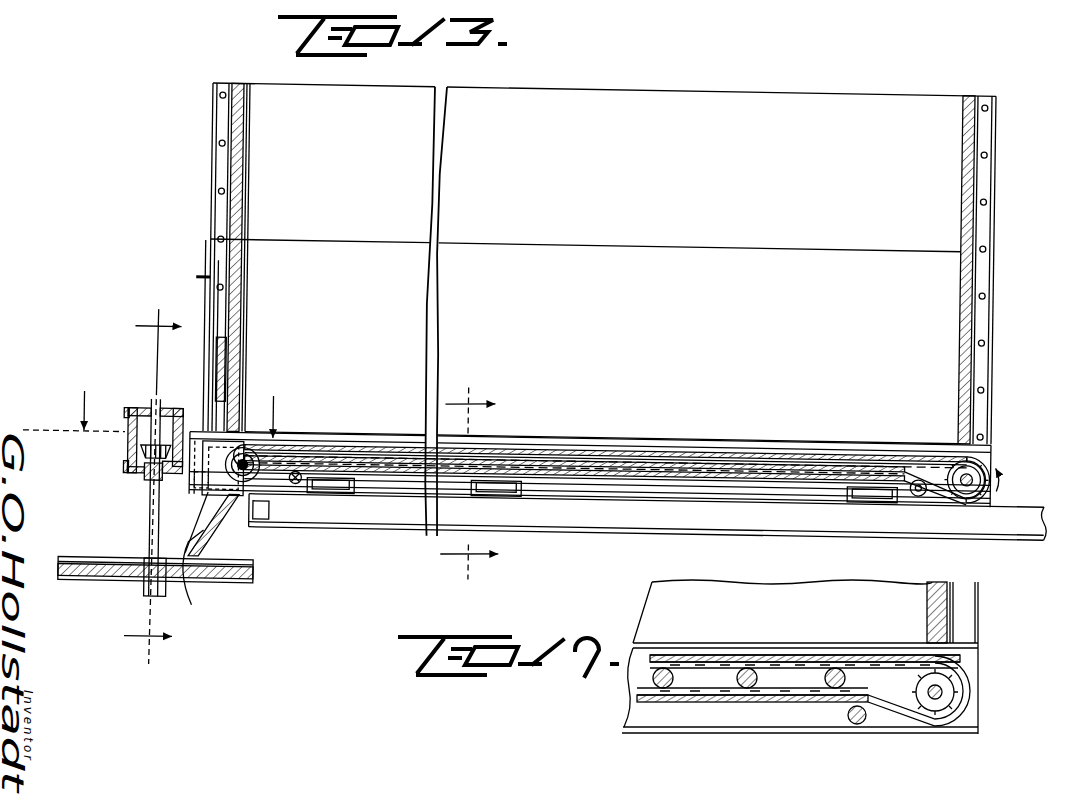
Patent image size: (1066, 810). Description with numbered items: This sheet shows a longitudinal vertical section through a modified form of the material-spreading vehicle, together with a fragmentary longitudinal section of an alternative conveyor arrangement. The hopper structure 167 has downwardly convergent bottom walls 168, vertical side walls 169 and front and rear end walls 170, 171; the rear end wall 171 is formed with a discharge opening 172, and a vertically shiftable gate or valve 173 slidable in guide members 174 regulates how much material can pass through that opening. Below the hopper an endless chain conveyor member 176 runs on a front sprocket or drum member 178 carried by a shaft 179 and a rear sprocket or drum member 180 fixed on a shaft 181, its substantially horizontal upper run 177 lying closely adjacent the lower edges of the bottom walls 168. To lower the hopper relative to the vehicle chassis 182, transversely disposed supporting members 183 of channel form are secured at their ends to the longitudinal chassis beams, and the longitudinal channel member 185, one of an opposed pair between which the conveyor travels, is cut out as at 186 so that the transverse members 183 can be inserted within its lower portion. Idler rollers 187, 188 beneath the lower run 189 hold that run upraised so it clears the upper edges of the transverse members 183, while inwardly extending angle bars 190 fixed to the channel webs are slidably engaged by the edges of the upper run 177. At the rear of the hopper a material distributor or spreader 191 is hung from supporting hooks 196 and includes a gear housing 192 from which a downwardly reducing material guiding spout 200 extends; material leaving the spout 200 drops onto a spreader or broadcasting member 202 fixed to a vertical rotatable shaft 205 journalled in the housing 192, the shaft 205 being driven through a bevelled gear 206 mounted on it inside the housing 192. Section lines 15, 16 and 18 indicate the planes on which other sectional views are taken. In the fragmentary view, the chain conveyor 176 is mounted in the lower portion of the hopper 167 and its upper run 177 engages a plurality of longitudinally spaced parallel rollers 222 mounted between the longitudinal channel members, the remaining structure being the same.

In FIG. 13, the section line 15 is at (159, 405).
In FIG. 13, the section line 16 is at (152, 487).
In FIG. 13, the section line 18 is at (470, 475).
In FIG. 13, the hopper structure 167 is at (854, 99).
In FIG. 19, the hopper structure 167 is at (926, 602).
In FIG. 13, the bottom walls 168 is at (678, 259).
In FIG. 13, the side walls 169 is at (693, 97).
In FIG. 13, the front end wall 170 is at (966, 149).
In FIG. 19, the front end wall 170 is at (942, 622).
In FIG. 13, the rear end wall 171 is at (244, 159).
In FIG. 13, the discharge opening 172 is at (234, 362).
In FIG. 13, the gate or valve 173 is at (225, 305).
In FIG. 13, the guide members 174 is at (224, 368).
In FIG. 13, the endless conveyor member 176 is at (644, 442).
In FIG. 19, the endless conveyor member 176 is at (786, 657).
In FIG. 13, the upper run 177 is at (712, 450).
In FIG. 19, the upper run 177 is at (716, 655).
In FIG. 13, the front sprocket or drum member 178 is at (990, 452).
In FIG. 13, the shaft 179 is at (994, 479).
In FIG. 19, the shaft 179 is at (937, 702).
In FIG. 13, the rear sprocket or drum member 180 is at (241, 505).
In FIG. 13, the shaft 181 is at (252, 446).
In FIG. 13, the vehicle chassis 182 is at (646, 503).
In FIG. 19, the vehicle chassis 182 is at (786, 727).
In FIG. 13, the supporting members 183 is at (521, 495).
In FIG. 13, the channel member 185 is at (812, 487).
In FIG. 13, the cut out 186 is at (366, 493).
In FIG. 13, the idler roller 187 is at (306, 489).
In FIG. 13, the idler roller 188 is at (918, 490).
In FIG. 13, the lower run 189 is at (706, 474).
In FIG. 13, the angle bars 190 is at (889, 464).
In FIG. 13, the material distributor or spreader 191 is at (131, 406).
In FIG. 13, the gear housing 192 is at (151, 471).
In FIG. 13, the supporting hook 196 is at (207, 433).
In FIG. 13, the material guiding spout 200 is at (204, 580).
In FIG. 13, the spreader or broadcasting member 202 is at (112, 582).
In FIG. 13, the rotatable shaft 205 is at (163, 503).
In FIG. 13, the bevelled gear 206 is at (133, 449).
In FIG. 19, the rollers 222 is at (664, 669).